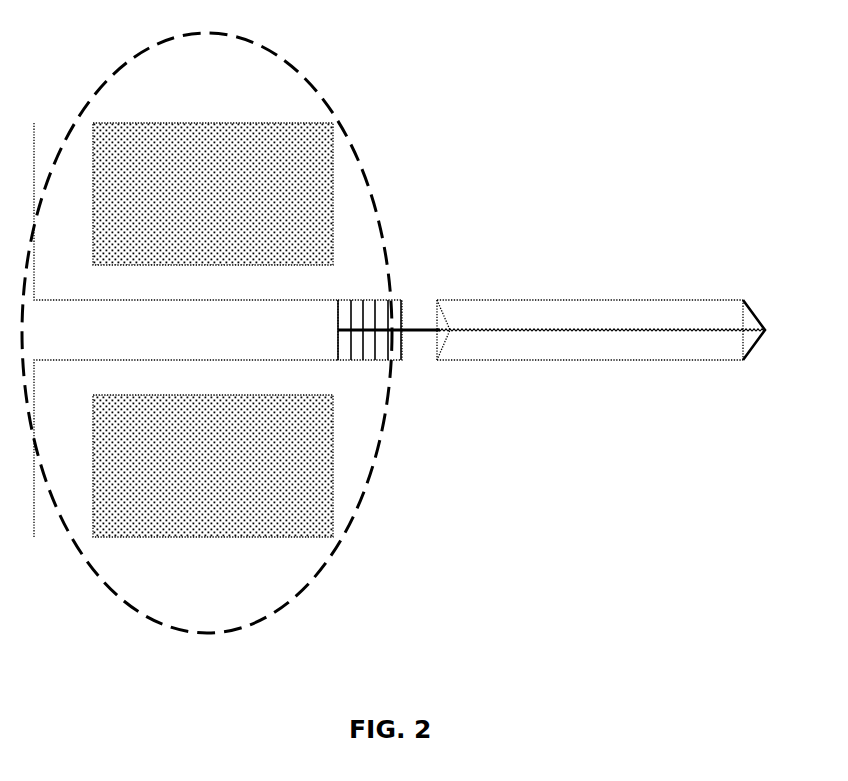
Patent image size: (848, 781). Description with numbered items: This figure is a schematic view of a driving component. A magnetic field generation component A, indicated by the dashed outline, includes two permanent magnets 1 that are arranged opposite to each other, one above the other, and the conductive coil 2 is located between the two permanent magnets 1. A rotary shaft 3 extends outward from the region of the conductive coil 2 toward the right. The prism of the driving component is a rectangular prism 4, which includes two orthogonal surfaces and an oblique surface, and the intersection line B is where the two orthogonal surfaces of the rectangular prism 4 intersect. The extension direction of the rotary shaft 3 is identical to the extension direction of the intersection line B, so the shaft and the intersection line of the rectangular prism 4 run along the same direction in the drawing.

The permanent magnet 1 is at (188, 145).
The conductive coil 2 is at (345, 298).
The rotary shaft 3 is at (402, 327).
The rectangular prism 4 is at (520, 300).
The magnetic field generation component A is at (368, 200).
The intersection line B is at (544, 331).